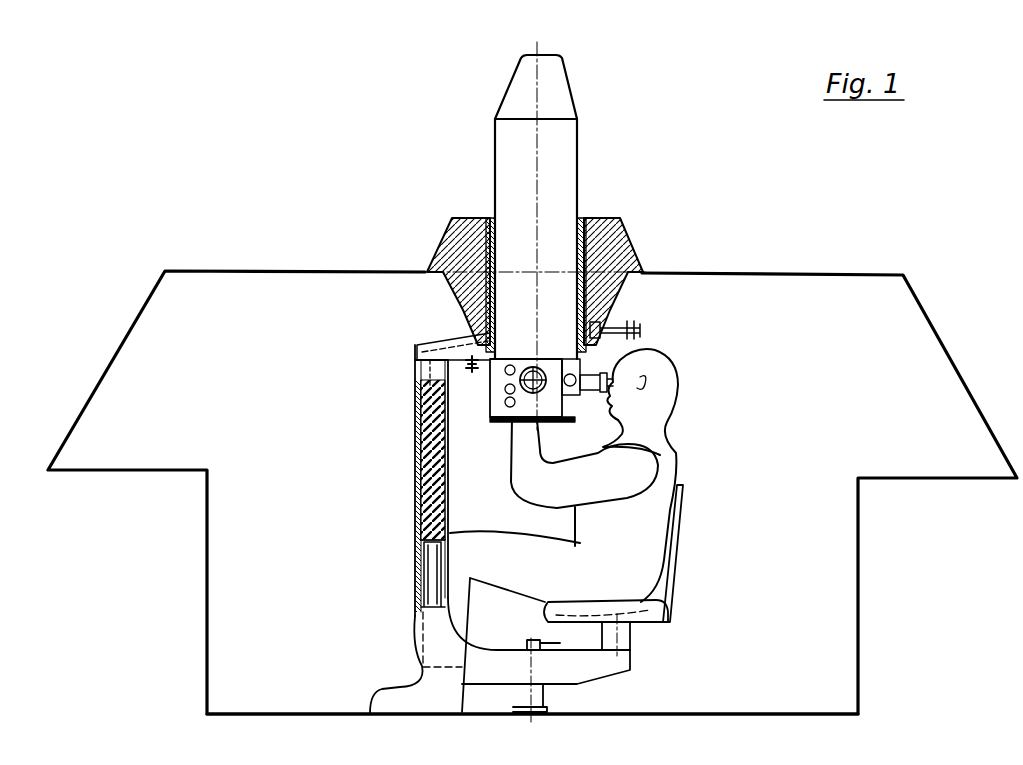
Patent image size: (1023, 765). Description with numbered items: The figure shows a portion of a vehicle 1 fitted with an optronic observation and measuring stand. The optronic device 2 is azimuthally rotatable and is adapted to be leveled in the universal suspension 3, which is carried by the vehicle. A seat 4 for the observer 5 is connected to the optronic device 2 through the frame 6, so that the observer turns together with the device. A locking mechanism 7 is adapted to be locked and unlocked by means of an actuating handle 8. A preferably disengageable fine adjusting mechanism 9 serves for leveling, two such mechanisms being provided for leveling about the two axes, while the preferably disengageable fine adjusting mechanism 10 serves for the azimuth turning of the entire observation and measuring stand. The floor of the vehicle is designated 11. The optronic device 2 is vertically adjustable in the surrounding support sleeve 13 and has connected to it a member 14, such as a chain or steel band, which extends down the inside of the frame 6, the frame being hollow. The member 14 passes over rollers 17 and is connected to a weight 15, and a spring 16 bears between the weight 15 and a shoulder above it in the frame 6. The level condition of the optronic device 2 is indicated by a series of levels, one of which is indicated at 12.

The vehicle 1 is at (790, 273).
The optronic device 2 is at (567, 153).
The universal suspension 3 is at (611, 233).
The seat 4 is at (647, 612).
The observer 5 is at (663, 470).
The frame 6 is at (430, 484).
The locking mechanism 7 is at (545, 700).
The actuating handle 8 is at (526, 640).
The fine adjusting mechanism 9 is at (622, 325).
The fine adjusting mechanism 10 is at (470, 375).
The floor 11 is at (345, 710).
The level 12 is at (551, 405).
The support sleeve 13 is at (588, 217).
The member 14 is at (420, 434).
The weight 15 is at (432, 585).
The spring 16 is at (430, 541).
The rollers 17 is at (470, 337).